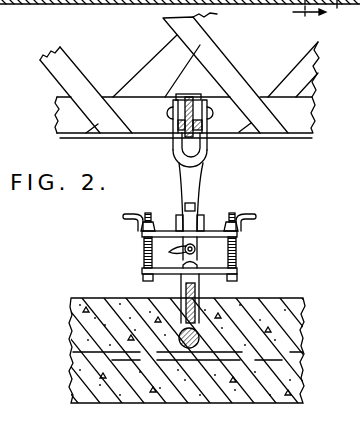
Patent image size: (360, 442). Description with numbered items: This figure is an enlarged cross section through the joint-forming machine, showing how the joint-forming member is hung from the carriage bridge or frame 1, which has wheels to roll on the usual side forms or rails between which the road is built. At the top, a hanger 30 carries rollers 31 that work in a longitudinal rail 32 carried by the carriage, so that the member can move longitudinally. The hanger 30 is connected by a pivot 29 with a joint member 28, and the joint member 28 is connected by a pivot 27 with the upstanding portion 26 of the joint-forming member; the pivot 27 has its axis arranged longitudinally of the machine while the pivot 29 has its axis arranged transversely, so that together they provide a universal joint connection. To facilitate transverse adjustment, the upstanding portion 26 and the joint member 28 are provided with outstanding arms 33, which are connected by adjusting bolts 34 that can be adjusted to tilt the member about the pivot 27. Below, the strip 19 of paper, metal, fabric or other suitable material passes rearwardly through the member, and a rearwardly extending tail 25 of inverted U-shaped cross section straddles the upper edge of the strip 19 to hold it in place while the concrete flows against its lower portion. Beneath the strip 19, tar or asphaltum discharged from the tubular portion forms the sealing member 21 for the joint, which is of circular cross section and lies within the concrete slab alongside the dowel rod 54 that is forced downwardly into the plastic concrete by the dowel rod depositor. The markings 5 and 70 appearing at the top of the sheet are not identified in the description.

The carriage bridge or frame 1 is at (278, 134).
The section line indicator 5 is at (309, 17).
The member 70 is at (341, 16).
The rollers 31 is at (196, 103).
The longitudinal rail 32 is at (181, 148).
The hangers 30 is at (199, 176).
The pivots 29 is at (204, 220).
The joint members 28 is at (178, 229).
The outstanding arms 33 is at (143, 240).
The pivots 27 is at (198, 249).
The upstanding portions 26 is at (199, 260).
The adjusting bolts 34 is at (237, 278).
The strip 19 is at (181, 296).
The tail 25 is at (196, 296).
The sealing member 21 is at (191, 348).
The dowel rod 54 is at (302, 346).